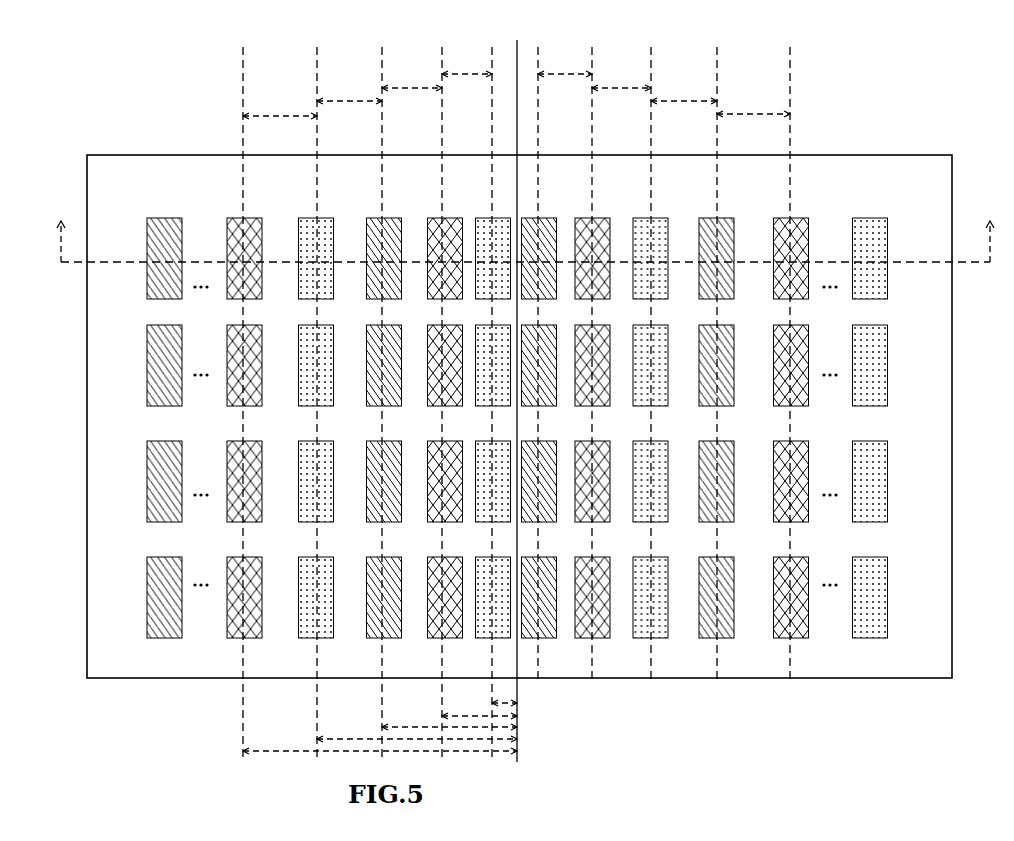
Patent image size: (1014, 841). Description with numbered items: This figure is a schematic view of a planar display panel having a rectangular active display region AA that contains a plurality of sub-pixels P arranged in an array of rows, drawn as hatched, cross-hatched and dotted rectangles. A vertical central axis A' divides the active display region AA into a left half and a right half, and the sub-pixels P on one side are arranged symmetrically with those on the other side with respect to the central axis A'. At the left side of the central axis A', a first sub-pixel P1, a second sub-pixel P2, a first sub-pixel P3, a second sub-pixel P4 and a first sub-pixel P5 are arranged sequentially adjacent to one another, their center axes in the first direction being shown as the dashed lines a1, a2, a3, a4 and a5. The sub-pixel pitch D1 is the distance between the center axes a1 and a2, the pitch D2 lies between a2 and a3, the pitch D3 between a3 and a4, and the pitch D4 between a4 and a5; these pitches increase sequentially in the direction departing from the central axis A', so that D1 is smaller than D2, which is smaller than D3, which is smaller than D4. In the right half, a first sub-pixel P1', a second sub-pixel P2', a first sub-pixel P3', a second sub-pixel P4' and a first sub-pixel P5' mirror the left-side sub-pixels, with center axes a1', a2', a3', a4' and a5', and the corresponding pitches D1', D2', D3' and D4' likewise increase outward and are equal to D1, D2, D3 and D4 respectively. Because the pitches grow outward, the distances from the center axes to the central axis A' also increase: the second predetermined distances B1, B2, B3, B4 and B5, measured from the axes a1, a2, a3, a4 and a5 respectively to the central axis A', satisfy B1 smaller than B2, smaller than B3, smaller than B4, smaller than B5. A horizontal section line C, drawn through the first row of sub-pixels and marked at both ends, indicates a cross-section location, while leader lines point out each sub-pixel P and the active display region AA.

The sub-pixel P is at (168, 218).
The first sub-pixel P1 is at (482, 207).
The second sub-pixel P2 is at (432, 209).
The first sub-pixel P3 is at (371, 209).
The second sub-pixel P4 is at (296, 211).
The first sub-pixel P5 is at (220, 211).
The first sub-pixel P1' is at (553, 206).
The second sub-pixel P2' is at (610, 206).
The first sub-pixel P3' is at (668, 206).
The second sub-pixel P4' is at (736, 206).
The first sub-pixel P5' is at (811, 206).
The active display region AA is at (690, 680).
The central axis A' is at (532, 382).
The section line C is at (525, 227).
The center axis a1 is at (492, 393).
The center axis a2 is at (442, 393).
The center axis a3 is at (382, 393).
The center axis a4 is at (317, 393).
The center axis a5 is at (243, 393).
The center axis a1' is at (548, 353).
The center axis a2' is at (594, 346).
The center axis a3' is at (651, 346).
The center axis a4' is at (717, 346).
The center axis a5' is at (788, 346).
The sub-pixel pitch D1 is at (467, 62).
The sub-pixel pitch D2 is at (412, 76).
The sub-pixel pitch D3 is at (349, 89).
The sub-pixel pitch D4 is at (280, 104).
The sub-pixel pitch D1' is at (565, 61).
The sub-pixel pitch D2' is at (621, 75).
The sub-pixel pitch D3' is at (684, 89).
The sub-pixel pitch D4' is at (753, 102).
The second predetermined distance B1 is at (505, 692).
The second predetermined distance B2 is at (479, 706).
The second predetermined distance B3 is at (449, 715).
The second predetermined distance B4 is at (417, 728).
The second predetermined distance B5 is at (380, 740).